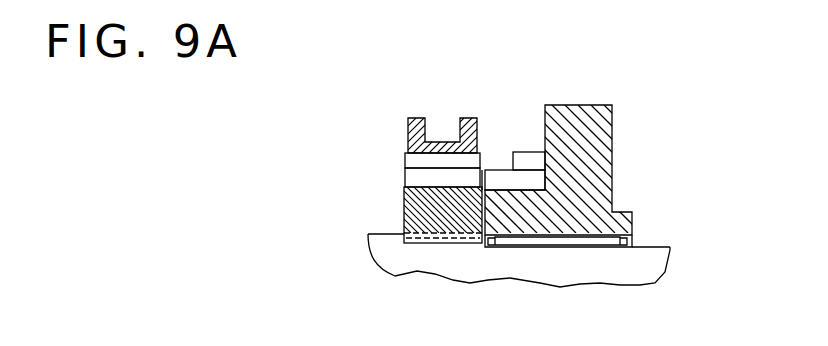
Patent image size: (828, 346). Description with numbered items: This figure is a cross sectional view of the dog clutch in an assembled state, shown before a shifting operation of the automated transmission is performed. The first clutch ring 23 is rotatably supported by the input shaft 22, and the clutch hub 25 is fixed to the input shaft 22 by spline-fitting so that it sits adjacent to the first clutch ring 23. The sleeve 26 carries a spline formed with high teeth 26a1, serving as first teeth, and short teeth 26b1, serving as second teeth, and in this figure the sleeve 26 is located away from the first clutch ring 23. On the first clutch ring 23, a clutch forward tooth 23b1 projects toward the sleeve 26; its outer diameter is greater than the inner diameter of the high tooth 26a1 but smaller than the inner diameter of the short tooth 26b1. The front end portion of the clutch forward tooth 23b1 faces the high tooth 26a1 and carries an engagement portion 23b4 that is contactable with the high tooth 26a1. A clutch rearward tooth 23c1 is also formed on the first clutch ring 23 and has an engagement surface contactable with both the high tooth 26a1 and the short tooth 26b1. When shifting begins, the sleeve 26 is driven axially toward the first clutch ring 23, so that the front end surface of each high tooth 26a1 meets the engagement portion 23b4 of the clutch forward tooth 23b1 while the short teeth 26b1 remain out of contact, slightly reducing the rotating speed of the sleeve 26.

The input shaft 22 is at (387, 253).
The first clutch ring 23 is at (601, 104).
The clutch forward tooth 23b1 is at (504, 178).
The engagement portion 23b4 is at (482, 178).
The clutch rearward tooth 23c1 is at (532, 158).
The clutch hub 25 is at (405, 205).
The sleeve 26 is at (413, 118).
The high tooth 26a1 is at (423, 178).
The short tooth 26b1 is at (423, 160).